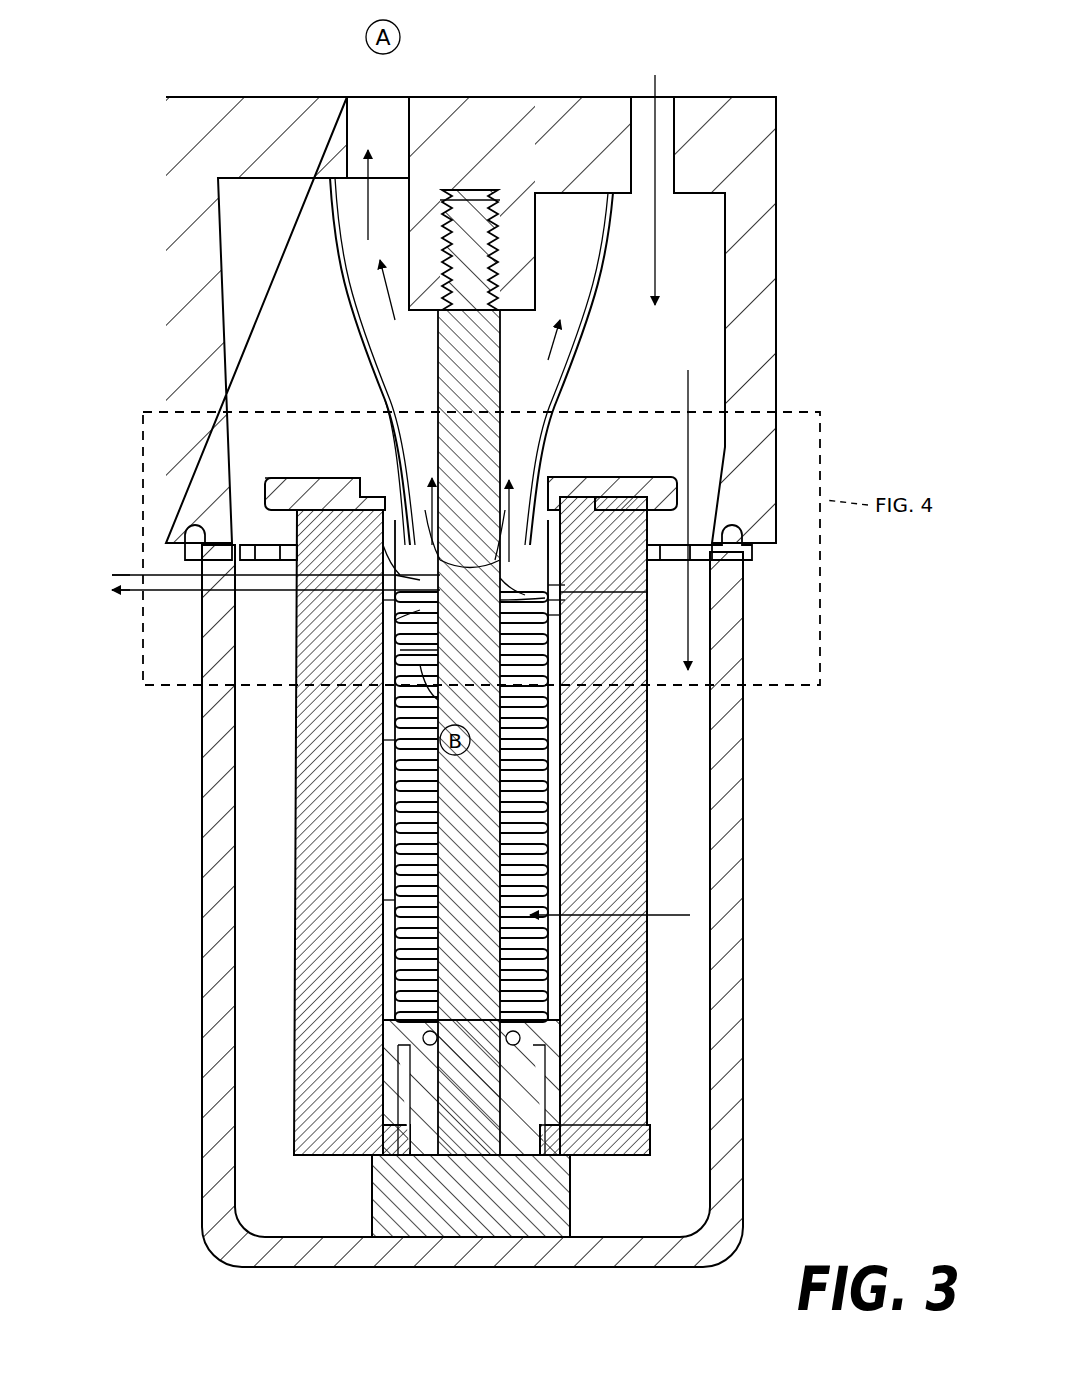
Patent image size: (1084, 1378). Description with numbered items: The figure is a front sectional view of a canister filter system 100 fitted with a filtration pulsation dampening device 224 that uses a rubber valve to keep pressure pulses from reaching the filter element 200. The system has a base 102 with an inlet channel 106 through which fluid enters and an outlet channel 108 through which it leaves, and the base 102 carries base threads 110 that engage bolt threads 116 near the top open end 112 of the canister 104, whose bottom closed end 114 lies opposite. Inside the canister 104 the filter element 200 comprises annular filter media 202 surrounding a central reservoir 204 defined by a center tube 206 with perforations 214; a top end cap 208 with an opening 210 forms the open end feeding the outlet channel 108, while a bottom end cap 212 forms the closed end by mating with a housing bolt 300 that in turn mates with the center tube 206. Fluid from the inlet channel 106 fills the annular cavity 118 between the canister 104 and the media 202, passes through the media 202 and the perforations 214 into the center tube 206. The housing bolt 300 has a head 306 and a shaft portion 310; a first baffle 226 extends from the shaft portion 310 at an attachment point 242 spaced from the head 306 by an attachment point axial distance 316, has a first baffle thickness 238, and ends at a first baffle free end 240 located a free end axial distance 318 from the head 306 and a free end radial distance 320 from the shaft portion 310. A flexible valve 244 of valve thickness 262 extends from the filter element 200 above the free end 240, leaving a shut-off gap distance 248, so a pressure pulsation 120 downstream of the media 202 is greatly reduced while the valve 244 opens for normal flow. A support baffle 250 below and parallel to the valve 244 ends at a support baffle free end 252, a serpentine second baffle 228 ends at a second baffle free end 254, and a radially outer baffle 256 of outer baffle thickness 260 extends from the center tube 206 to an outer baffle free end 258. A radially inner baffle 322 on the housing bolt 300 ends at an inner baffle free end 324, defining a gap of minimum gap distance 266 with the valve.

The canister filter system 100 is at (508, 75).
The base 102 is at (748, 100).
The canister 104 is at (725, 1025).
The inlet channel 106 is at (663, 105).
The outlet channel 108 is at (357, 100).
The base threads 110 is at (500, 200).
The top open end 112 is at (282, 470).
The bottom closed end 114 is at (660, 1270).
The bolt threads 116 is at (505, 215).
The annular cavity 118 is at (690, 915).
The pressure pulsation 120 is at (383, 96).
The filter element 200 is at (568, 468).
The annular filter media 202 is at (625, 990).
The central reservoir 204 is at (560, 1030).
The center tube 206 is at (560, 945).
The top end cap 208 is at (638, 480).
The opening 210 is at (446, 455).
The bottom end cap 212 is at (598, 1156).
The perforations 214 is at (560, 875).
The filtration pulsation dampening device 224 is at (393, 433).
The first baffle 226 is at (420, 600).
The second baffle 228 is at (352, 320).
The first baffle thickness 238 is at (400, 630).
The first baffle free end 240 is at (430, 585).
The attachment point 242 is at (505, 590).
The flexible valve 244 is at (425, 575).
The shut-off gap distance 248 is at (440, 680).
The support baffle 250 is at (415, 560).
The support baffle free end 252 is at (395, 600).
The second baffle free end 254 is at (500, 540).
The radially outer baffle 256 is at (560, 585).
The outer baffle free end 258 is at (565, 600).
The outer baffle thickness 260 is at (550, 560).
The valve thickness 262 is at (620, 592).
The minimum gap distance 266 is at (430, 560).
The housing bolt 300 is at (485, 805).
The head 306 is at (490, 1240).
The shaft portion 310 is at (455, 935).
The attachment point axial distance 316 is at (496, 1115).
The free end axial distance 318 is at (118, 580).
The free end radial distance 320 is at (430, 740).
The radially inner baffle 322 is at (515, 605).
The inner baffle free end 324 is at (560, 615).